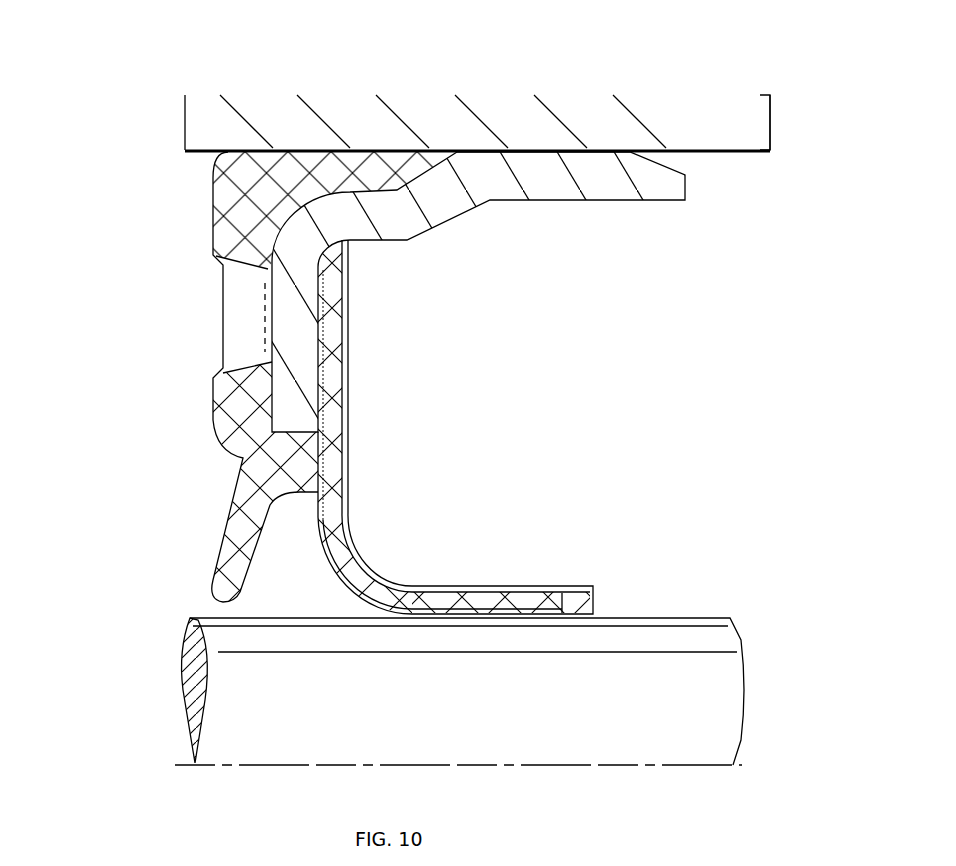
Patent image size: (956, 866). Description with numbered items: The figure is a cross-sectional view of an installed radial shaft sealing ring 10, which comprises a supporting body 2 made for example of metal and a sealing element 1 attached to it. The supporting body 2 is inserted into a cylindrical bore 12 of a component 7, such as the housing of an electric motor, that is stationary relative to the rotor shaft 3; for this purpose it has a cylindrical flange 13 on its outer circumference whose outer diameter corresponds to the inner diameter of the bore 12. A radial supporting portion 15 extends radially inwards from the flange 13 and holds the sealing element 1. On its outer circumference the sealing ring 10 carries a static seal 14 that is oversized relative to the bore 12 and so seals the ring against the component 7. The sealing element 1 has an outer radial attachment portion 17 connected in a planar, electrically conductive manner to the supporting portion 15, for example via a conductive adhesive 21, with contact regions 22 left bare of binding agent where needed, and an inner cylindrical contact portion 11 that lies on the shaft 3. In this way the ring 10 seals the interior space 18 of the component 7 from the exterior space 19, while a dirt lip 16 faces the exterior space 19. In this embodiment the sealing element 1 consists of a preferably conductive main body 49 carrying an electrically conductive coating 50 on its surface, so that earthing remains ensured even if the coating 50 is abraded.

The sealing element 1 is at (358, 521).
The supporting body 2 is at (428, 234).
The shaft 3 is at (715, 693).
The component 7 is at (586, 120).
The radial shaft sealing ring 10 is at (193, 282).
The contact portion 11 is at (538, 600).
The cylindrical bore 12 is at (693, 97).
The cylindrical flange 13 is at (548, 180).
The static seal 14 is at (345, 177).
The radial supporting portion 15 is at (292, 322).
The dirt lip 16 is at (245, 518).
The attachment portion 17 is at (330, 375).
The interior space 18 is at (628, 399).
The exterior space 19 is at (127, 389).
The conductive adhesive 21 is at (323, 297).
The contact regions 22 is at (527, 150).
The main body 49 is at (328, 450).
The electrically conductive coating 50 is at (368, 548).